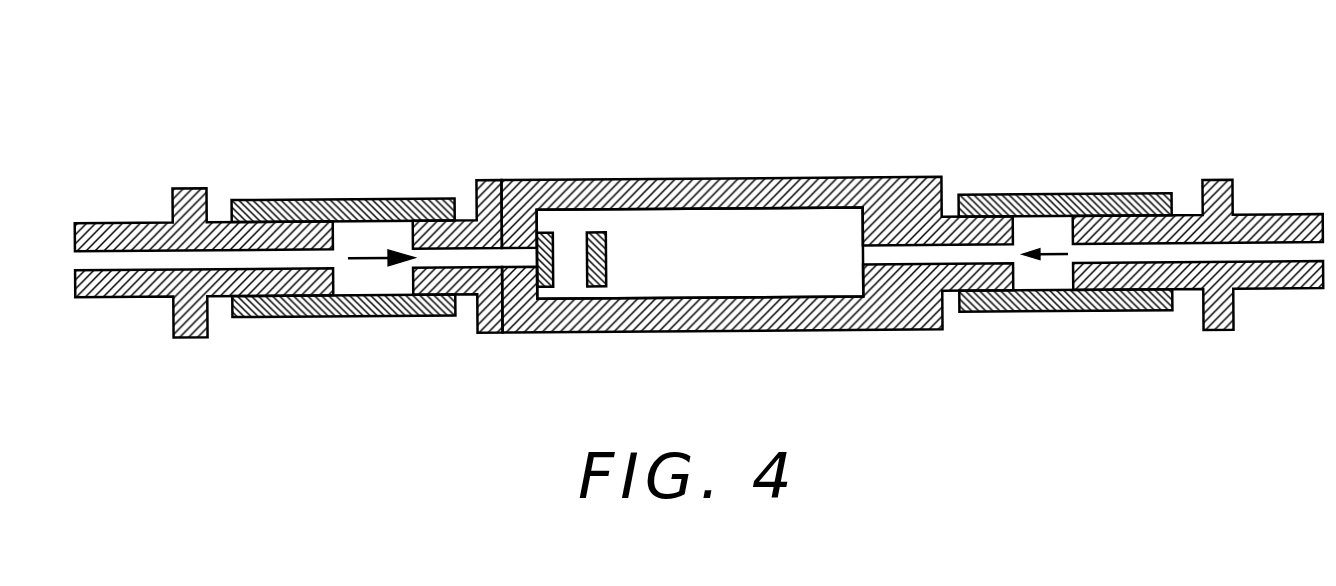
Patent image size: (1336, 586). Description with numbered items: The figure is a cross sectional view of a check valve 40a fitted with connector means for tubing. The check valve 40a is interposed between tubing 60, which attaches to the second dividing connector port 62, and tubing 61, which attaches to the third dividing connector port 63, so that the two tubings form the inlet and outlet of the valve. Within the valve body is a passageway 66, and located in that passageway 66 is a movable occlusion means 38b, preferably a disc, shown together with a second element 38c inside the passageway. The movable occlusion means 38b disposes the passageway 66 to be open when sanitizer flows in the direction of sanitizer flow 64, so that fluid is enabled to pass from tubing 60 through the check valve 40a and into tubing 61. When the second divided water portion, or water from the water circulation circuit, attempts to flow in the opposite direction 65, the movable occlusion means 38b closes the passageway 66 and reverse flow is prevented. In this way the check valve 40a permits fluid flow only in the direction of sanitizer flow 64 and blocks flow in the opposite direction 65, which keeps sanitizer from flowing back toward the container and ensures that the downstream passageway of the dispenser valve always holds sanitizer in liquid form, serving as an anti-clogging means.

The second dividing connector port 62 is at (130, 222).
The tubing 60 is at (258, 199).
The direction of sanitizer flow 64 is at (373, 258).
The check valve 40a is at (763, 179).
The passageway 66 is at (718, 258).
The first membrane / element 38c is at (545, 233).
The movable occlusion means 38b is at (595, 231).
The tubing 61 is at (1014, 197).
The opposite direction of flow 65 is at (1043, 253).
The third dividing connector port 63 is at (1270, 216).